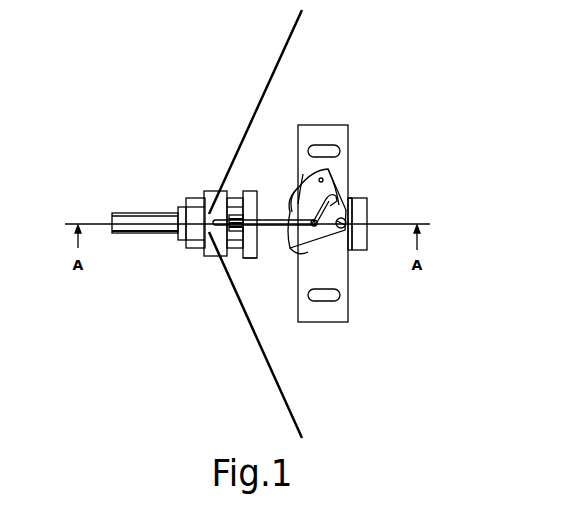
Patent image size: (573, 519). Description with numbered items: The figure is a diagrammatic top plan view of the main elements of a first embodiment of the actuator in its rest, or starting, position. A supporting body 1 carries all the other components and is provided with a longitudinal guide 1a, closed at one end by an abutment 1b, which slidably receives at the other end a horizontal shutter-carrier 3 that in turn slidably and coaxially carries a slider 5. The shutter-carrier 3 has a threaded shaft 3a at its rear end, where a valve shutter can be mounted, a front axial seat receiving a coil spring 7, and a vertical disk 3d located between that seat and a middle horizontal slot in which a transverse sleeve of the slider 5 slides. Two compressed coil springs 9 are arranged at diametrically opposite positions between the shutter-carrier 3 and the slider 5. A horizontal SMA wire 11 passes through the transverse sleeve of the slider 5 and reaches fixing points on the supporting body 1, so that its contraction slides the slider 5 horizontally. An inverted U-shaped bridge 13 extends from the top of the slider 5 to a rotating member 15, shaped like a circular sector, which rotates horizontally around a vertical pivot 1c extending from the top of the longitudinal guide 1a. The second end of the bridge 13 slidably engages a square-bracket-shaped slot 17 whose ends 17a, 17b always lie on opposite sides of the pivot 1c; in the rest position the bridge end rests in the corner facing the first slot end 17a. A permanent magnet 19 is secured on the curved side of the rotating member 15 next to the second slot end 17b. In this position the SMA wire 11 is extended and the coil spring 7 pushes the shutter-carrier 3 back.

The supporting body 1 is at (342, 335).
The longitudinal guide 1a is at (352, 252).
The abutment 1b is at (365, 236).
The vertical pivot 1c is at (351, 203).
The shutter-carrier 3 is at (136, 198).
The threaded shaft 3a is at (139, 234).
The vertical disk 3d is at (250, 192).
The slider 5 is at (214, 253).
The coil spring 7 is at (358, 213).
The compressed coil springs 9 is at (236, 233).
The SMA wire 11 is at (274, 68).
The bridge 13 is at (250, 259).
The rotating member 15 is at (300, 219).
The slot 17 is at (316, 173).
The first slot end 17a is at (300, 249).
The second slot end 17b is at (340, 168).
The permanent magnet 19 is at (305, 176).